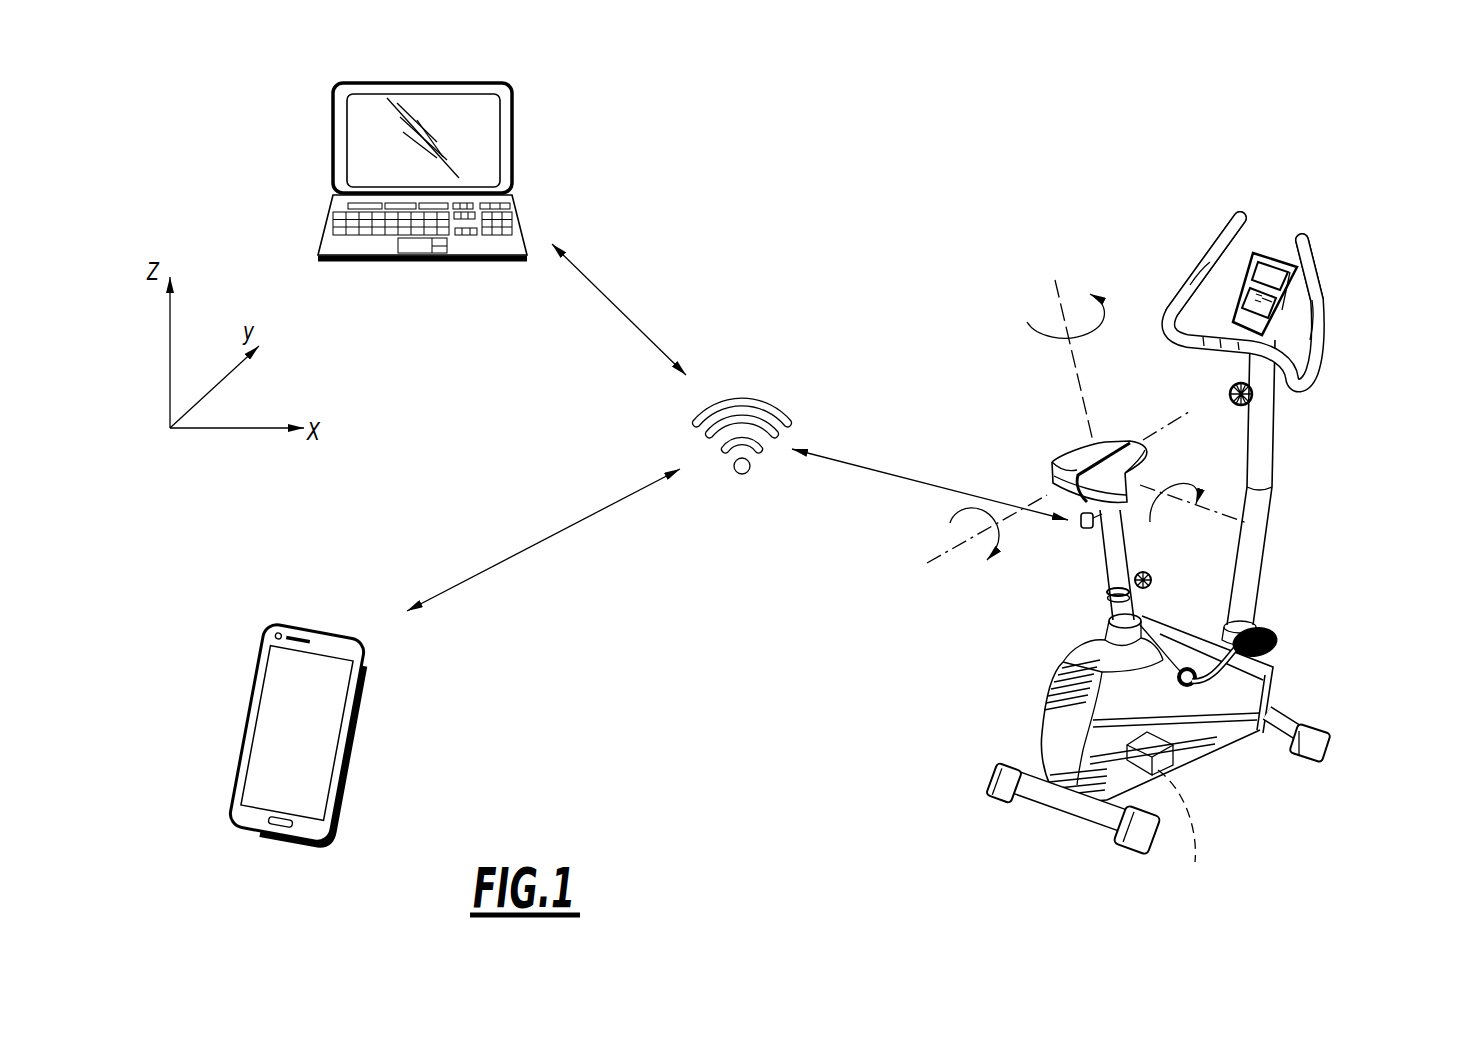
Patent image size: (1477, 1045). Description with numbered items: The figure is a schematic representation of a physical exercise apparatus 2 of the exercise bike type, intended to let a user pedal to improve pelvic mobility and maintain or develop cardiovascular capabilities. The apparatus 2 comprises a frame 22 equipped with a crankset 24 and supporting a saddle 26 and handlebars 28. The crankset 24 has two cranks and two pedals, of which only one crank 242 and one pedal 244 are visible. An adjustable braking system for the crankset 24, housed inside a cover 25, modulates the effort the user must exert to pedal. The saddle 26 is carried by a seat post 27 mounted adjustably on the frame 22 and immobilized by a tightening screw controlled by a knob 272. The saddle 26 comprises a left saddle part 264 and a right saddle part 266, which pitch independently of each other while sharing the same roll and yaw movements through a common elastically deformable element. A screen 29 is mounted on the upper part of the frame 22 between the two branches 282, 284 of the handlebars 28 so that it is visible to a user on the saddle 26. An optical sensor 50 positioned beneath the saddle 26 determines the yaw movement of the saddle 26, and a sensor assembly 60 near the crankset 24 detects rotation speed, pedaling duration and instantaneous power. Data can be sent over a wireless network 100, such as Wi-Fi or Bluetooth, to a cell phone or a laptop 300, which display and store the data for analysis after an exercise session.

The physical exercise apparatus 2 is at (1131, 268).
The frame 22 is at (1255, 500).
The crankset 24 is at (1194, 684).
The cover 25 is at (1057, 676).
The saddle 26 is at (911, 340).
The seat post 27 is at (1112, 581).
The handlebars 28 is at (1218, 238).
The screen 29 is at (1267, 253).
The optical sensor 50 is at (1063, 536).
The sensor assembly 60 is at (1176, 833).
The wireless network 100 is at (788, 357).
The crank 242 is at (1268, 700).
The pedal 244 is at (1270, 637).
The left saddle part 264 is at (1070, 457).
The right saddle part 266 is at (1107, 470).
The knob 272 is at (1151, 580).
The branch of the handlebars 282 is at (1206, 265).
The branch of the handlebars 284 is at (1309, 270).
The laptop 300 is at (328, 81).